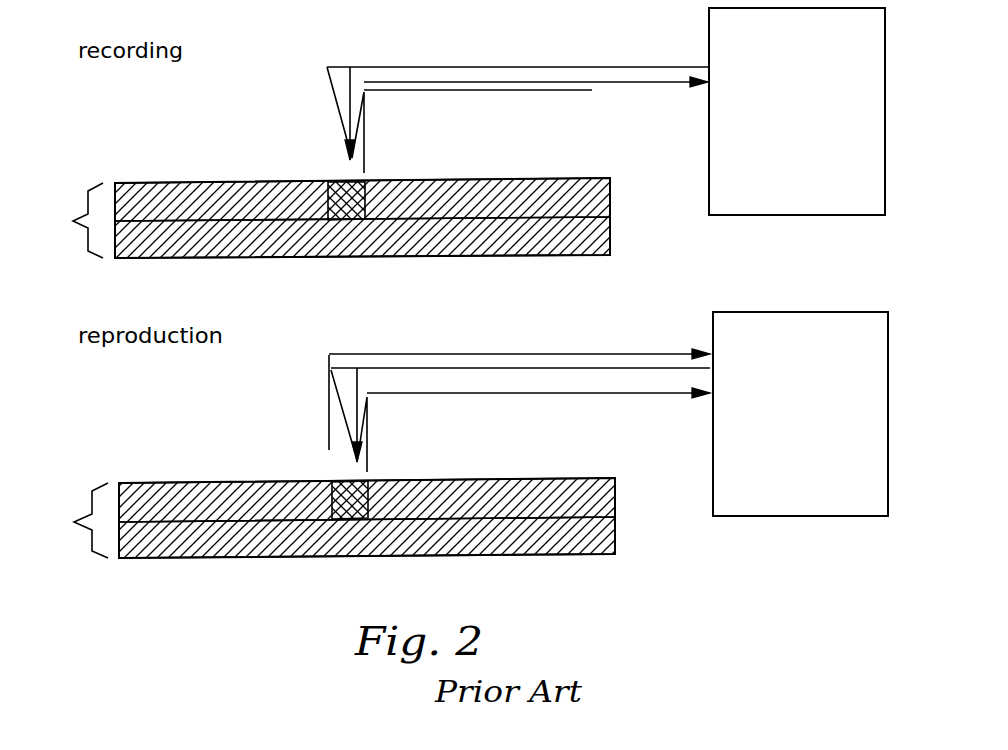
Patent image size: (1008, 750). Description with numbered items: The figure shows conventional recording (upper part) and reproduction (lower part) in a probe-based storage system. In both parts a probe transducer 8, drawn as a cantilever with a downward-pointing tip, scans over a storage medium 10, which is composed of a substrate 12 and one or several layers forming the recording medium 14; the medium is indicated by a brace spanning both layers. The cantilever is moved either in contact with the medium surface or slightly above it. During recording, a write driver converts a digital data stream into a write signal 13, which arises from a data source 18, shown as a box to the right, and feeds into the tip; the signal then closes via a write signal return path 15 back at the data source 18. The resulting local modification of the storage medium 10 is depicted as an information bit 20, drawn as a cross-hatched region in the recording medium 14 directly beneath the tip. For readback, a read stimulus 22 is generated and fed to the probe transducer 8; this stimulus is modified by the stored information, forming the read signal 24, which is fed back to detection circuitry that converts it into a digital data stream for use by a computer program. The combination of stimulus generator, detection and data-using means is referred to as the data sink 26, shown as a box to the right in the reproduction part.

The probe transducer 8 is at (345, 93).
The storage medium 10 is at (325, 368).
The substrate 12 is at (595, 236).
The write signal 13 is at (655, 66).
The recording medium 14 is at (595, 198).
The write signal return path 15 is at (620, 91).
The data source 18 is at (838, 203).
The information bit 20 is at (332, 178).
The read stimulus 22 is at (625, 394).
The read signal 24 is at (480, 352).
The data sink 26 is at (842, 505).